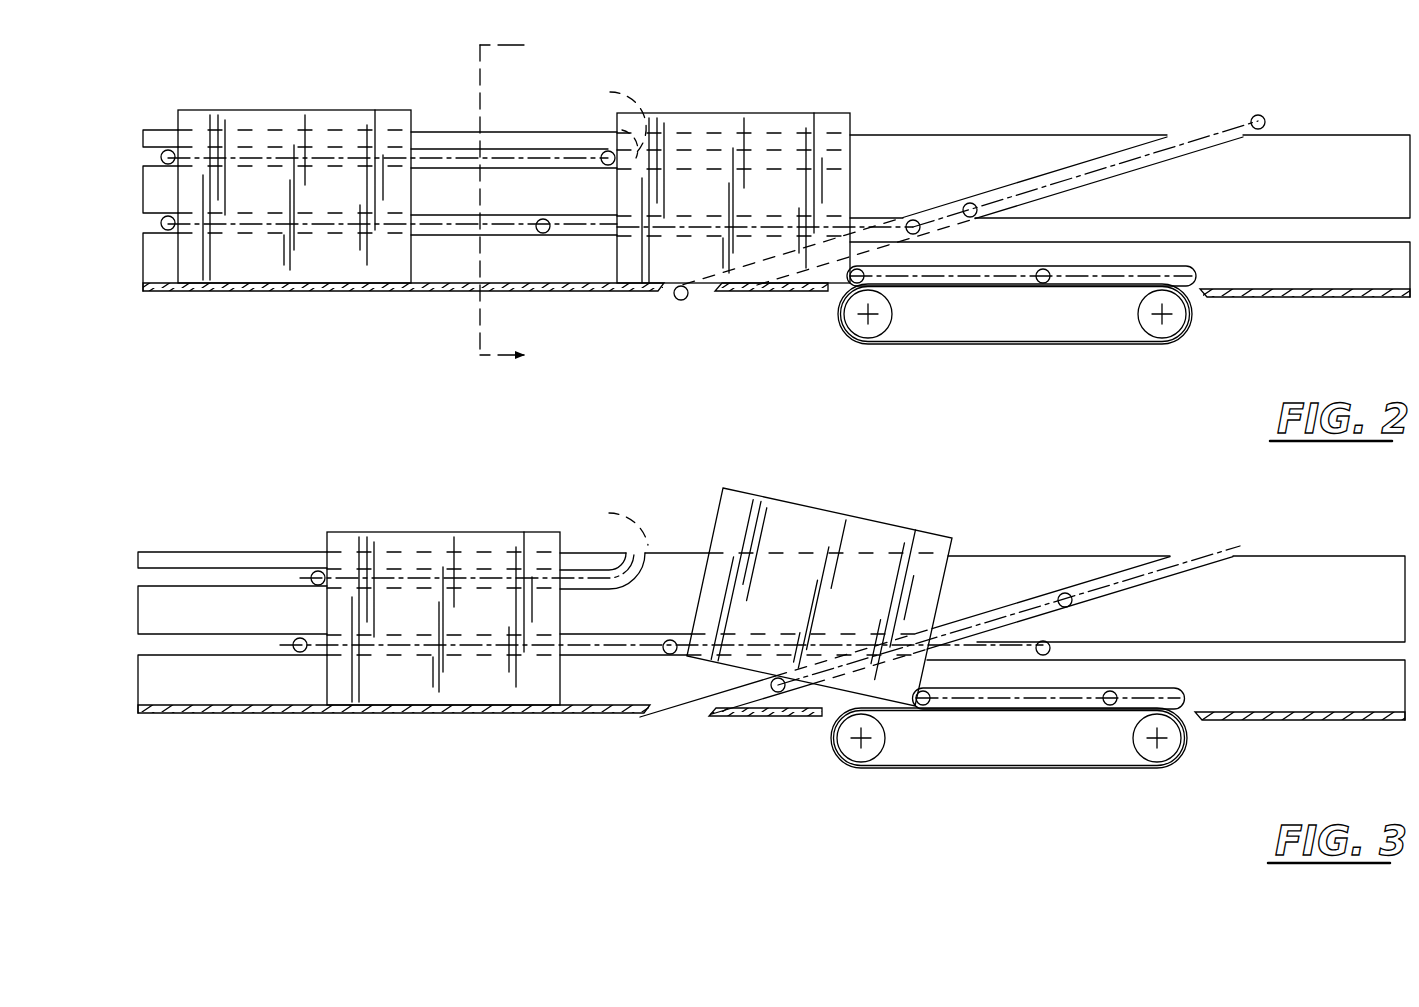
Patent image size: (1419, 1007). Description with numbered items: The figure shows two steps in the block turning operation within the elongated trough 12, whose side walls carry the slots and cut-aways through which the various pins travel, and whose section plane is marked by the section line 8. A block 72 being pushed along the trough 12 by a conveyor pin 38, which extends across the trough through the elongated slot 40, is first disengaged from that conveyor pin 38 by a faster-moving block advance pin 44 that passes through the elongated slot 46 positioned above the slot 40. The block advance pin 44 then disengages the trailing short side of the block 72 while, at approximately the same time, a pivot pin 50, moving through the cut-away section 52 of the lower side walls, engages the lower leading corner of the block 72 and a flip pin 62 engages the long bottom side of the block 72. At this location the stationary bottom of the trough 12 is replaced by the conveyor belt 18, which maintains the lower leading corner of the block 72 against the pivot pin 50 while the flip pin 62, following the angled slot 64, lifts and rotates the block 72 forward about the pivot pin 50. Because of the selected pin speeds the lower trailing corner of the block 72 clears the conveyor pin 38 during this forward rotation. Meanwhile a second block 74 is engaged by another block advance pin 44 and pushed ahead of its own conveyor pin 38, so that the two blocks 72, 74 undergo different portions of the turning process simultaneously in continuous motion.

In FIG. 2, the section line 8- 8 is at (518, 203).
In FIG. 2, the elongated trough 12 is at (320, 294).
In FIG. 3, the elongated trough 12 is at (320, 716).
In FIG. 2, the conveyor belt 18 is at (1030, 346).
In FIG. 3, the conveyor belt 18 is at (1025, 770).
In FIG. 2, the conveyor pin 38 is at (547, 232).
In FIG. 3, the conveyor pin 38 is at (666, 655).
In FIG. 2, the elongated slot 40 is at (160, 227).
In FIG. 3, the elongated slot 40 is at (145, 644).
In FIG. 2, the block advance pin 44 is at (601, 156).
In FIG. 2, the elongated slot 46 is at (160, 155).
In FIG. 3, the elongated slot 46 is at (145, 577).
In FIG. 2, the pivot pin 50 is at (886, 297).
In FIG. 3, the pivot pin 50 is at (924, 707).
In FIG. 2, the cut-away section 52 is at (1185, 283).
In FIG. 3, the cut-away section 52 is at (1178, 703).
In FIG. 2, the flip pin 62 is at (680, 300).
In FIG. 3, the flip pin 62 is at (776, 693).
In FIG. 2, the angled slot 64 is at (1133, 157).
In FIG. 3, the angled slot 64 is at (1124, 576).
In FIG. 2, the block 72 is at (712, 113).
In FIG. 3, the block 72 is at (805, 506).
In FIG. 2, the second block 74 is at (271, 110).
In FIG. 3, the second block 74 is at (431, 532).